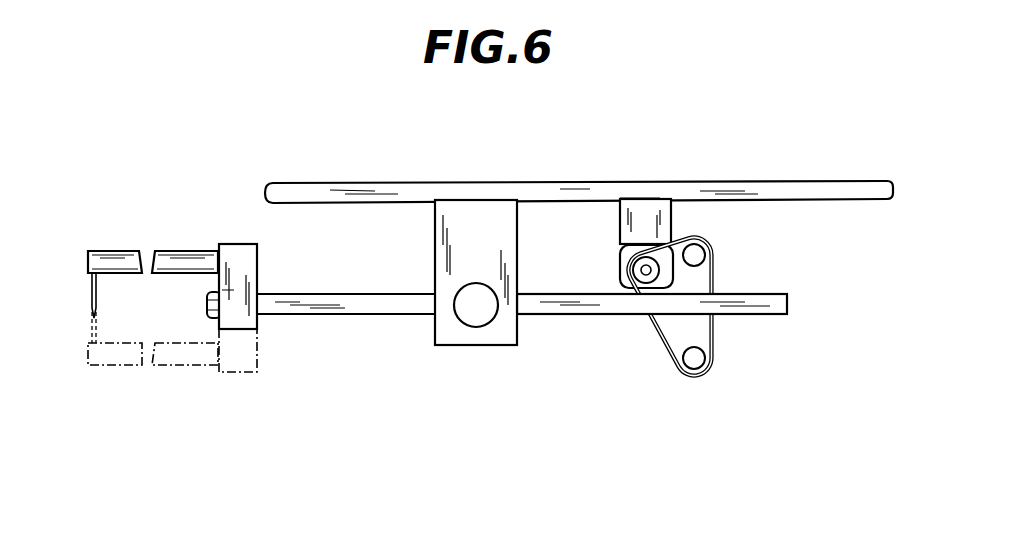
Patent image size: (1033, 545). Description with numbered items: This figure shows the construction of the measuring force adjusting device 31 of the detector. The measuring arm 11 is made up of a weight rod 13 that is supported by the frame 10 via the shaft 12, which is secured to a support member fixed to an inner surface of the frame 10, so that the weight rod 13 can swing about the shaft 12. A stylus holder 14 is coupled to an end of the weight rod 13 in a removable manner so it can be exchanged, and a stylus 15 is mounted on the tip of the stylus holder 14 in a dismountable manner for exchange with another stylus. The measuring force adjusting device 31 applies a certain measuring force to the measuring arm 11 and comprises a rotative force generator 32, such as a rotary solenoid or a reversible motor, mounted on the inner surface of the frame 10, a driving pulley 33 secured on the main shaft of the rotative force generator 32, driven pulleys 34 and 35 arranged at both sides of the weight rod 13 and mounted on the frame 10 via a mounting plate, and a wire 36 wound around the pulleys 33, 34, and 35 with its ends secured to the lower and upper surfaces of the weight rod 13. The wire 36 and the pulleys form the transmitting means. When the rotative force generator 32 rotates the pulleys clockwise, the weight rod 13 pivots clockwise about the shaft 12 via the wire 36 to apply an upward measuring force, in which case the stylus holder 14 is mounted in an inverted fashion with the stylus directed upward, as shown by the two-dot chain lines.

The frame 10 is at (551, 182).
The measuring arm 11 is at (335, 315).
The shaft 12 is at (476, 327).
The weight rod 13 is at (537, 315).
The stylus holder 14 is at (122, 250).
The stylus 15 is at (92, 335).
The measuring force adjusting device 31 is at (686, 338).
The rotative force generator 32 is at (622, 256).
The driving pulley 33 is at (633, 270).
The driven pulley 34 is at (700, 253).
The driven pulley 35 is at (692, 366).
The wire 36 is at (662, 343).